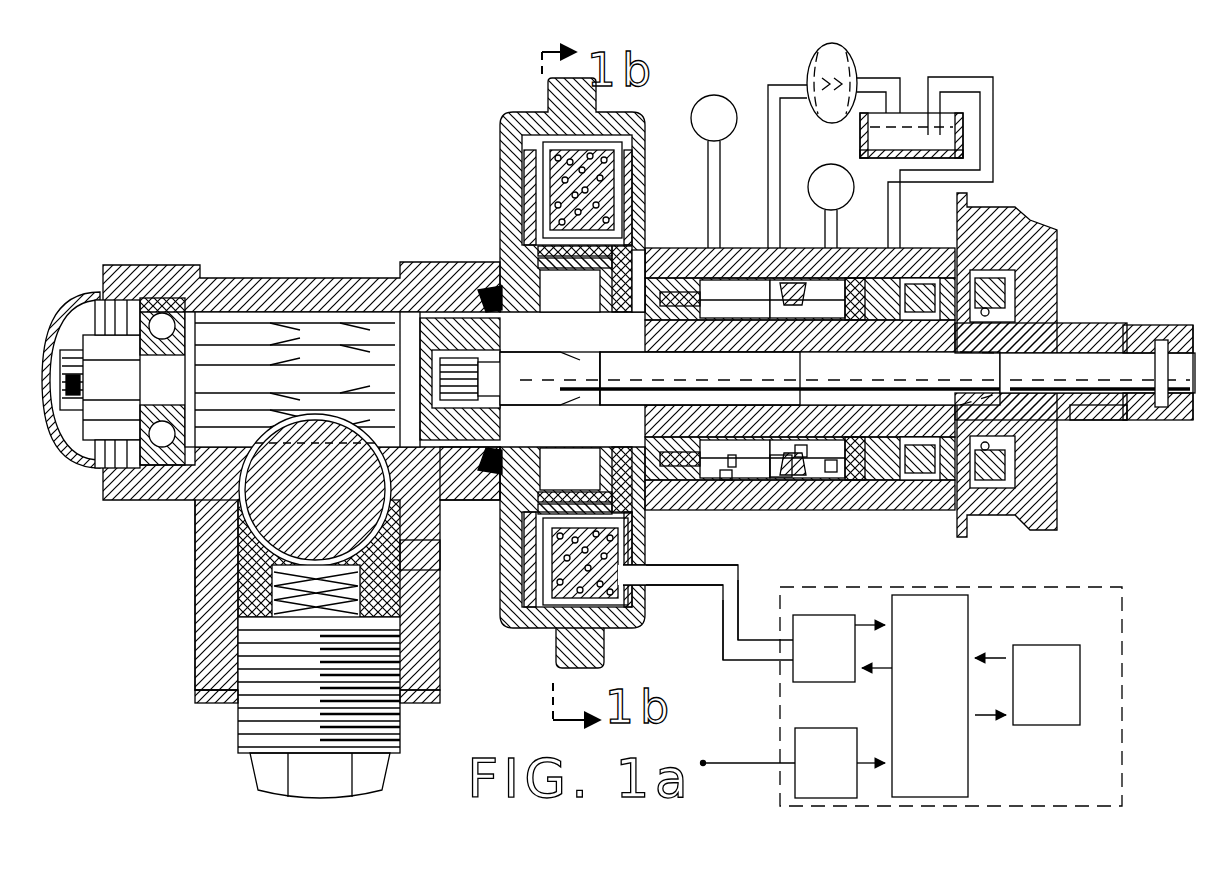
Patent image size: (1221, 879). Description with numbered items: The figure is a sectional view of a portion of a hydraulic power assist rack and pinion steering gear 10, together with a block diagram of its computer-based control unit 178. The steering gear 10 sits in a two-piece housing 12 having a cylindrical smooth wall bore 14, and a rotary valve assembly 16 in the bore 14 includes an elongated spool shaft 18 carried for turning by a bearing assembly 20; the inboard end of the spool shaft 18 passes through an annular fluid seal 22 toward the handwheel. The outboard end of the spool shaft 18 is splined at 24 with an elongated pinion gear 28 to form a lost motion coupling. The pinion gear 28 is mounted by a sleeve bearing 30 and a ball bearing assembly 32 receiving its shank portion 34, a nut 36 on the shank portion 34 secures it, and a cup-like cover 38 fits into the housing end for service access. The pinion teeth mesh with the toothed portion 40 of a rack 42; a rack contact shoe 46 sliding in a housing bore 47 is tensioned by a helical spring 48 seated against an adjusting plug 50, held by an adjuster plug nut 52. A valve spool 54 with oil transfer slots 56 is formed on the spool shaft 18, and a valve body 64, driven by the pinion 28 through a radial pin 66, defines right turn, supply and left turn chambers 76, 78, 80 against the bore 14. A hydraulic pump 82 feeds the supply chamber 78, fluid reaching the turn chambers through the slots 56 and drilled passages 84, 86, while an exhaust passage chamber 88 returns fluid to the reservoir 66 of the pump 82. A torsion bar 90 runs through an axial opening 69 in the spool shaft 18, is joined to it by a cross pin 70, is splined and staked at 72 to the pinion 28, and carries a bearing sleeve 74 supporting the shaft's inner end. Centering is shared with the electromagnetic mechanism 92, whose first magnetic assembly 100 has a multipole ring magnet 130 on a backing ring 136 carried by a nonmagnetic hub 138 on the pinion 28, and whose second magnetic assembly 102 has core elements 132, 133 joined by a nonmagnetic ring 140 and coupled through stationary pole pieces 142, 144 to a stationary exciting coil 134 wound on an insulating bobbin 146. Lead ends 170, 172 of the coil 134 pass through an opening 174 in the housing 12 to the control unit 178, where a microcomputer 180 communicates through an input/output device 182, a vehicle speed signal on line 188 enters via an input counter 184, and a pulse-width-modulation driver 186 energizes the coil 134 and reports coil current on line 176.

The steering gear 10 is at (410, 205).
The housing 12 is at (626, 150).
The bore 14 is at (872, 248).
The valve assembly 16 is at (658, 276).
The spool shaft 18 is at (1090, 414).
The bearing assembly 20 is at (855, 378).
The fluid seal 22 is at (1010, 292).
The splined connection 24 is at (510, 266).
The pinion gear 28 is at (300, 330).
The sleeve bearing 30 is at (300, 525).
The ball bearing assembly 32 is at (160, 318).
The shank portion 34 is at (64, 466).
The nut 36 is at (111, 445).
The cover 38 is at (60, 300).
The toothed portion 40 is at (196, 498).
The rack 42 is at (245, 560).
The rack contact shoe 46 is at (248, 582).
The housing bore 47 is at (397, 556).
The helical spring 48 is at (275, 610).
The adjusting plug 50 is at (262, 715).
The adjuster plug nut 52 is at (437, 704).
The valve spool 54 is at (738, 252).
The oil transfer slots 56 is at (800, 252).
The valve body 64 is at (798, 460).
The radial pin 66 is at (1025, 122).
The axial opening 69 is at (975, 377).
The cross pin 70 is at (1180, 418).
The staked spline connection 72 is at (456, 402).
The bearing sleeve 74 is at (585, 380).
The right turn chamber 76 is at (726, 482).
The supply chamber 78 is at (782, 472).
The left turn chamber 80 is at (850, 472).
The hydraulic pump 82 is at (808, 80).
The drilled passage 84 is at (733, 505).
The drilled passage 86 is at (836, 472).
The exhaust passage chamber 88 is at (925, 478).
The torsion bar 90 is at (1080, 360).
The electromagnetic mechanism 92 is at (522, 122).
The first magnetic assembly 100 is at (522, 218).
The second magnetic assembly 102 is at (520, 160).
The ring magnet 130 is at (628, 240).
The core element 132 is at (550, 620).
The core element 133 is at (630, 215).
The exciting coil 134 is at (604, 632).
The backing ring 136 is at (478, 503).
The nonmagnetic hub 138 is at (560, 296).
The nonmagnetic ring 140 is at (543, 176).
The stationary pole piece 142 is at (548, 578).
The stationary pole piece 144 is at (638, 270).
The insulating bobbin 146 is at (632, 200).
The lead end 170 is at (740, 615).
The lead end 172 is at (722, 605).
The opening 174 is at (642, 584).
The coil current signal line 176 is at (864, 625).
The computer-based control unit 178 is at (1125, 652).
The microcomputer 180 is at (1048, 726).
The input/output device 182 is at (960, 658).
The input counter 184 is at (795, 743).
The pulse-width-modulation driver 186 is at (815, 618).
The vehicle speed signal line 188 is at (748, 766).